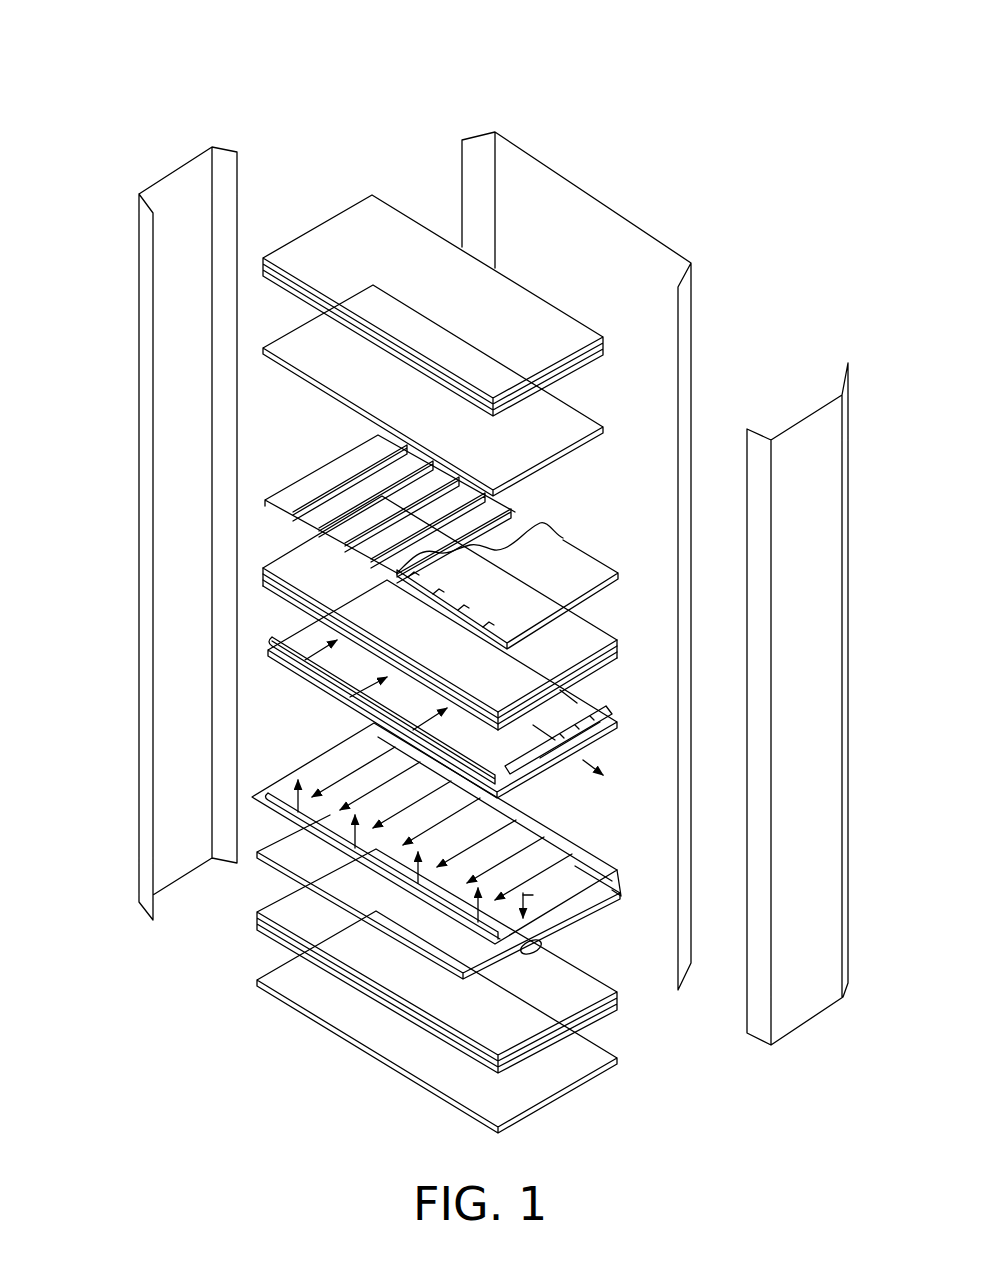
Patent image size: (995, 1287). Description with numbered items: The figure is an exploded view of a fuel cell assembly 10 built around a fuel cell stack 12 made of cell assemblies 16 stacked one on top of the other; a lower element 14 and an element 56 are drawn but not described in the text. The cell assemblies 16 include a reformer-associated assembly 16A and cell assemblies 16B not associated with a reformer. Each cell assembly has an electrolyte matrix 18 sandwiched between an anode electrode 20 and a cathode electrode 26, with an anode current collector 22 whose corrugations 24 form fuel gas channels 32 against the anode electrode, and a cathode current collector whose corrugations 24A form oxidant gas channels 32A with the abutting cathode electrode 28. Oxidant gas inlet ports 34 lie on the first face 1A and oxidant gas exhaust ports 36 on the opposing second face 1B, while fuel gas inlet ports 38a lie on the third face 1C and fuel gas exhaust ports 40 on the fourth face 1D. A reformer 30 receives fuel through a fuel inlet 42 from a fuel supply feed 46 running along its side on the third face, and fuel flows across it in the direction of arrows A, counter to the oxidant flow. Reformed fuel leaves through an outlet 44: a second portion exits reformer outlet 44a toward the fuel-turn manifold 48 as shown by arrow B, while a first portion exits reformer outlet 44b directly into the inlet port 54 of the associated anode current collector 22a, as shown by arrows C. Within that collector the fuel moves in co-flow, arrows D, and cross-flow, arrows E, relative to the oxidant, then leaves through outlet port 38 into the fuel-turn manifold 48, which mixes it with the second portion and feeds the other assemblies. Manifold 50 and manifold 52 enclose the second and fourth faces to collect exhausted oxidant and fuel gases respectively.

The fuel cell assembly 10 is at (172, 97).
The fuel cell stack 12 is at (373, 102).
The bottom chassis 14 is at (217, 1007).
The cell assemblies 16 is at (257, 981).
The reformer-associated assembly 16A is at (543, 750).
The cell assembly not associated with a reformer 16B is at (608, 425).
The electrolyte matrix 18 is at (257, 920).
The anode electrode 20 is at (590, 680).
The anode current collector 22 is at (618, 725).
The associated anode current collector 22a is at (627, 732).
The corrugations 24 is at (597, 742).
The corrugations 24A is at (372, 566).
The cathode electrode 26 is at (614, 642).
The cathode electrode 28 is at (618, 580).
The reformer 30 is at (302, 770).
The fuel gas channels 32 is at (553, 770).
The oxidant gas channels 32A is at (435, 600).
The oxidant gas inlet ports 34 is at (463, 620).
The oxidant gas exhaust ports 36 is at (527, 530).
The outlet port 38 is at (507, 793).
The fuel gas inlet ports 38a is at (520, 485).
The fuel gas exhaust ports 40 is at (262, 568).
The fuel inlet 42 is at (587, 868).
The outlet 44 is at (483, 943).
The reformer outlet 44a is at (505, 952).
The reformer outlet 44b is at (443, 900).
The fuel supply feed 46 is at (570, 930).
The fuel-turn manifold 48 is at (817, 672).
The manifold 50 is at (603, 259).
The manifold 52 is at (200, 516).
The inlet port 54 is at (333, 680).
The inner surface 56 is at (235, 470).
The first face 1A is at (268, 660).
The second face 1B is at (617, 730).
The third face 1C is at (613, 732).
The fourth face 1D is at (267, 651).
The arrows A is at (448, 887).
The arrow B is at (536, 902).
The arrows C is at (346, 818).
The arrows D is at (440, 721).
The arrows E is at (605, 776).